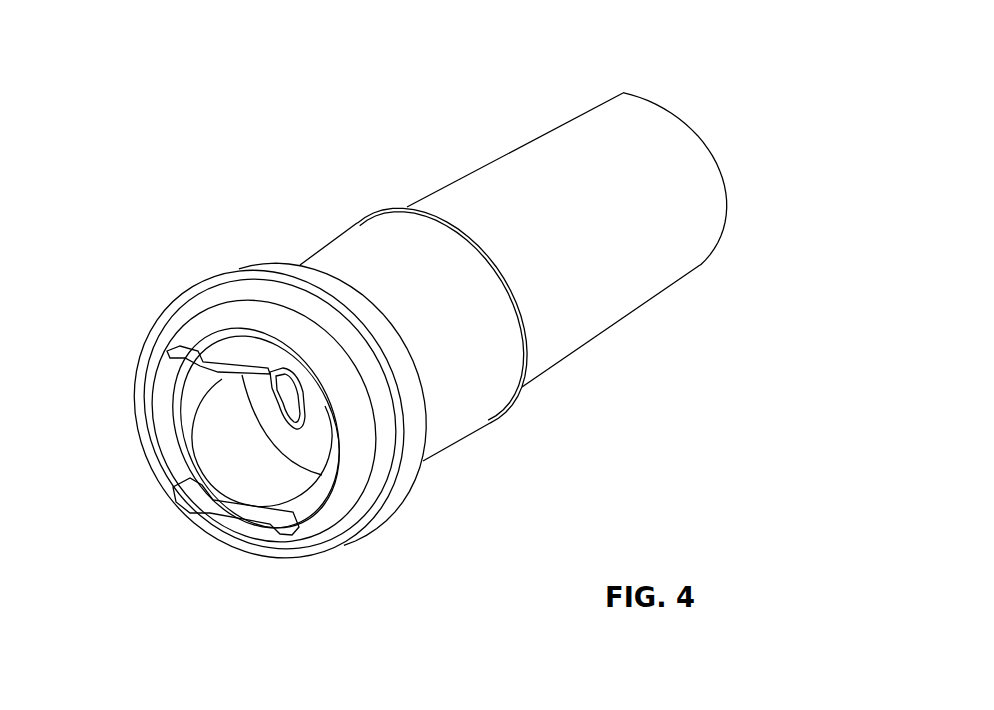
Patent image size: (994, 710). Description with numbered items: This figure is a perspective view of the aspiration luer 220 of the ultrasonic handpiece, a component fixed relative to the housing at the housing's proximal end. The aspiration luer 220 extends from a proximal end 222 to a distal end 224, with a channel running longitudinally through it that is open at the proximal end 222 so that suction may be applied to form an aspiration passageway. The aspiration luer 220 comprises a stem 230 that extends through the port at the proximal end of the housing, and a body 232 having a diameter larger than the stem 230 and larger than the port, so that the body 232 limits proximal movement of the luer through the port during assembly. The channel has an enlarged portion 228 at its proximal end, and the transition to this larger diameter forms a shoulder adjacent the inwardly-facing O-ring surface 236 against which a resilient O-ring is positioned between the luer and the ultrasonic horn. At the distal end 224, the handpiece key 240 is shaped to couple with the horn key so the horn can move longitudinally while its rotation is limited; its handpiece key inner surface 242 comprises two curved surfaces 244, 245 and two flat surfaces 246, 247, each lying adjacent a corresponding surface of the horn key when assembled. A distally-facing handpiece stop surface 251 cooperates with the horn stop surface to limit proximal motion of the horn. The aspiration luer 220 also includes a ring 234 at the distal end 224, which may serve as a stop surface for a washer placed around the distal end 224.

The proximal end 222 is at (657, 53).
The aspiration luer 220 is at (300, 177).
The stem 230 is at (687, 248).
The body 232 is at (463, 415).
The ring 234 is at (273, 260).
The handpiece key 240 is at (208, 347).
The handpiece stop surface 251 is at (242, 355).
The handpiece key inner surface 242 is at (167, 457).
The curved surface 245 is at (160, 407).
The enlarged portion 228 is at (282, 442).
The curved surface 244 is at (302, 432).
The flat surface 246 is at (182, 352).
The flat surface 247 is at (248, 513).
The O-ring surface 236 is at (245, 437).
The distal end 224 is at (126, 411).